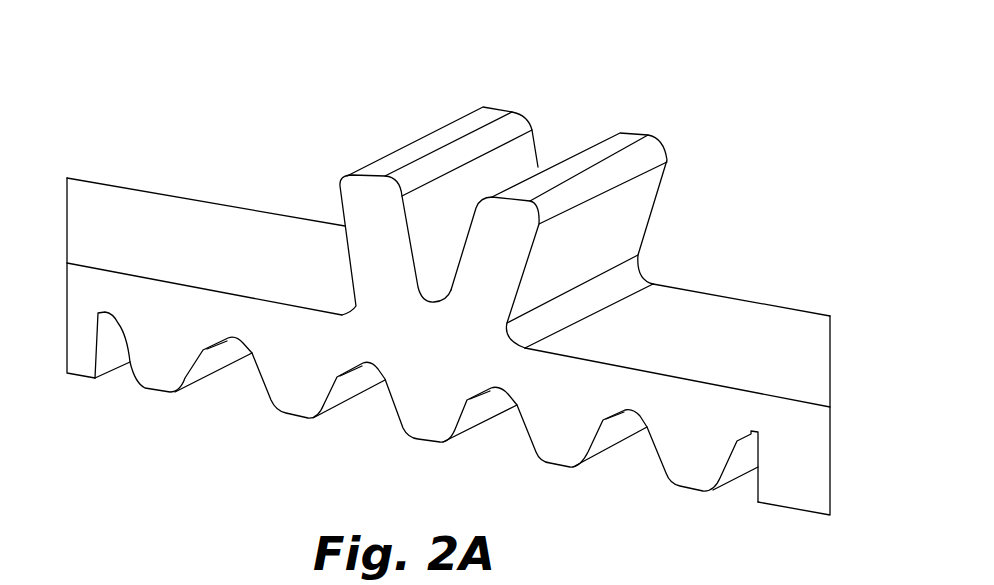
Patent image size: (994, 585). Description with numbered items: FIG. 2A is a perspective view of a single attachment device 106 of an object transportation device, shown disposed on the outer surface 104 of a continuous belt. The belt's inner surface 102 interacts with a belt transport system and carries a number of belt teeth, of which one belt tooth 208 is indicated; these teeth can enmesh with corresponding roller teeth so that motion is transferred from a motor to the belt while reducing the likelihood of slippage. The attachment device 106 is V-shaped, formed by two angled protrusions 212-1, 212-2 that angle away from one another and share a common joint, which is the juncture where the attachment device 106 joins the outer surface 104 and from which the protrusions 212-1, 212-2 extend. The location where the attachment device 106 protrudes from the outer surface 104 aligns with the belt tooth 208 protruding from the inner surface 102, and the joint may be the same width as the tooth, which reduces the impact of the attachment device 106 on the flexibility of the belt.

The inner surface 102 is at (448, 269).
The outer surface 104 is at (215, 212).
The attachment device 106 is at (472, 182).
The belt tooth 208 is at (428, 423).
The angled protrusion 212-1 is at (358, 203).
The angled protrusion 212-2 is at (507, 230).